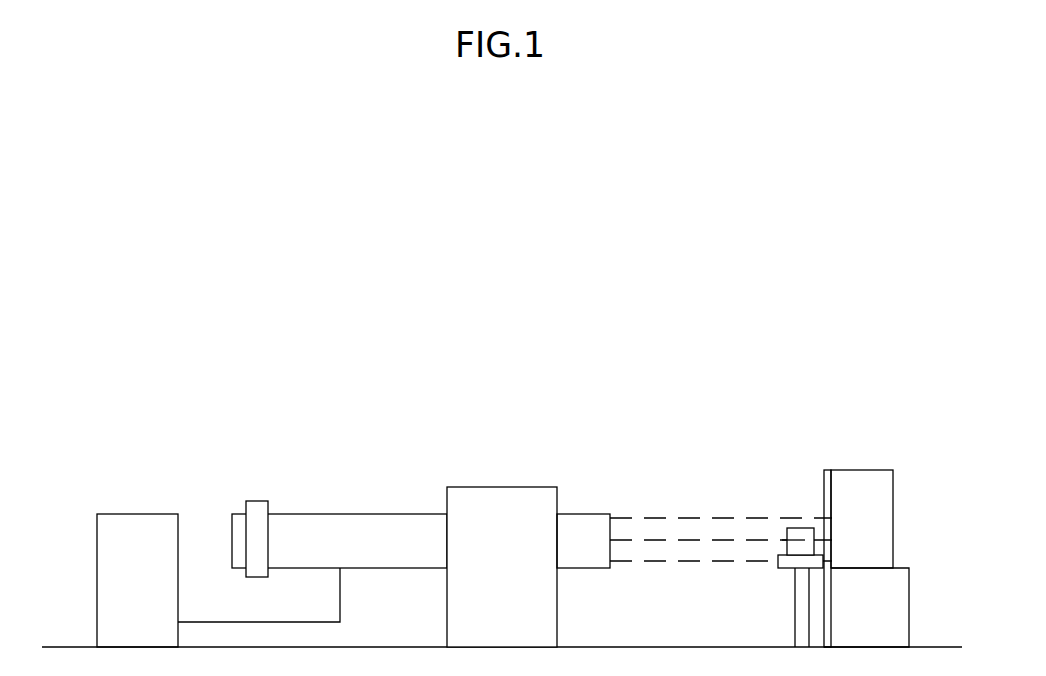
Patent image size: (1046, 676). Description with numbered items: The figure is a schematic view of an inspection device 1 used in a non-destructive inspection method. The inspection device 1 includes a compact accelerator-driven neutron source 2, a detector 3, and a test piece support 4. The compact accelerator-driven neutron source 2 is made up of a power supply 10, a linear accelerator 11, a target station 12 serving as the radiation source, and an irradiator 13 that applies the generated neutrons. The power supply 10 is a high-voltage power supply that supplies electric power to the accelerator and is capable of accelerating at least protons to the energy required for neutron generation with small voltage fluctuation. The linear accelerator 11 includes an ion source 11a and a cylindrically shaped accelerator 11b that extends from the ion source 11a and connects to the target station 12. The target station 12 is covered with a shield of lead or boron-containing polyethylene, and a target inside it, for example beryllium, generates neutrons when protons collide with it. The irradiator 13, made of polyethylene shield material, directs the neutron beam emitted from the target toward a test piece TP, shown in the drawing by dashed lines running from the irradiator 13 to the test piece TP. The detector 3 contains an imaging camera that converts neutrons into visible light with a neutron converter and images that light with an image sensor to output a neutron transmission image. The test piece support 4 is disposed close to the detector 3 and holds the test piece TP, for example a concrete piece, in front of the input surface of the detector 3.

The inspection device 1 is at (638, 341).
The compact accelerator-driven neutron source 2 is at (352, 357).
The detector 3 is at (865, 470).
The test piece support 4 is at (793, 583).
The power supply 10 is at (140, 514).
The linear accelerator 11 is at (339, 471).
The ion source 11a is at (255, 501).
The accelerator 11b is at (352, 514).
The target station 12 is at (502, 487).
The irradiator 13 is at (585, 514).
The test piece TP is at (802, 528).